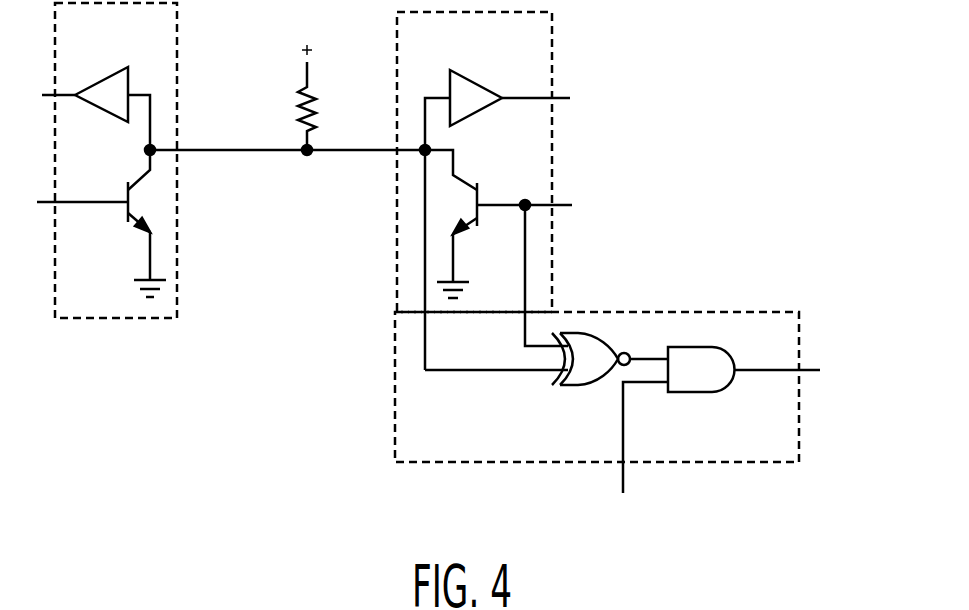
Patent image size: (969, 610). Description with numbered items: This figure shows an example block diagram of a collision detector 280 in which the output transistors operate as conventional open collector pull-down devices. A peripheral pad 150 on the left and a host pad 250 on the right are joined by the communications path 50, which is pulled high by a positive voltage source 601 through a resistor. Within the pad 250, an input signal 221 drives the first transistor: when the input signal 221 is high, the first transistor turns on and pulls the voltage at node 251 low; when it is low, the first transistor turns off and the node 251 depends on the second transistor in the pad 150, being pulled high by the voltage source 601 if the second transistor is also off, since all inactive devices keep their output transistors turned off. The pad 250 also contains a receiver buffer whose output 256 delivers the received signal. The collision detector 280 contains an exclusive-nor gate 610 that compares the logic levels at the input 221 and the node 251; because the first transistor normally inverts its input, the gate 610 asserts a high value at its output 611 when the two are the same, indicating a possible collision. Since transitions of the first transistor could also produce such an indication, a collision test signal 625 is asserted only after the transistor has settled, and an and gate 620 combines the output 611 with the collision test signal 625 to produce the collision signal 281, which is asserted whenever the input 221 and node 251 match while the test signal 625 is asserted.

The pad 150 is at (168, 63).
The communications path 50 is at (245, 148).
The positive voltage source 601 is at (307, 67).
The pad 250 is at (542, 73).
The receiver output 256 is at (553, 96).
The input signal 221 is at (553, 200).
The node 251 is at (423, 153).
The collision detector 280 is at (430, 453).
The exclusive-nor gate 610 is at (591, 333).
The output 611 is at (645, 357).
The and gate 620 is at (702, 347).
The collision test signal 625 is at (578, 502).
The collision signal 281 is at (801, 372).